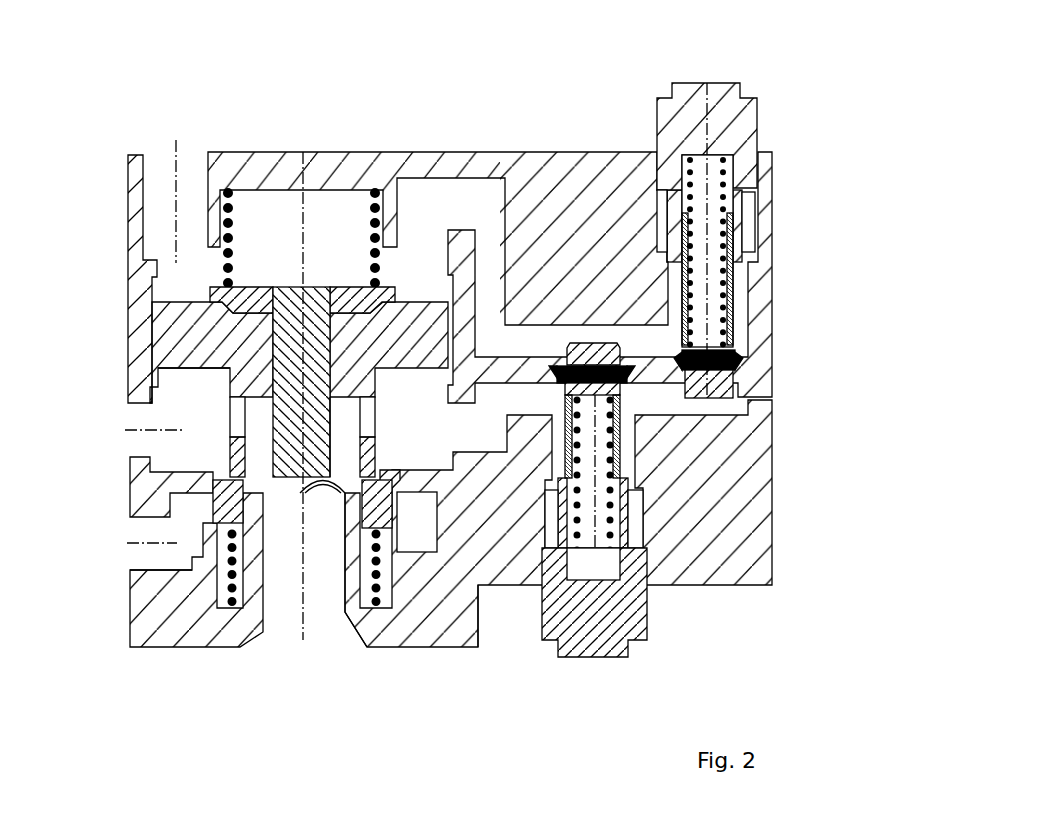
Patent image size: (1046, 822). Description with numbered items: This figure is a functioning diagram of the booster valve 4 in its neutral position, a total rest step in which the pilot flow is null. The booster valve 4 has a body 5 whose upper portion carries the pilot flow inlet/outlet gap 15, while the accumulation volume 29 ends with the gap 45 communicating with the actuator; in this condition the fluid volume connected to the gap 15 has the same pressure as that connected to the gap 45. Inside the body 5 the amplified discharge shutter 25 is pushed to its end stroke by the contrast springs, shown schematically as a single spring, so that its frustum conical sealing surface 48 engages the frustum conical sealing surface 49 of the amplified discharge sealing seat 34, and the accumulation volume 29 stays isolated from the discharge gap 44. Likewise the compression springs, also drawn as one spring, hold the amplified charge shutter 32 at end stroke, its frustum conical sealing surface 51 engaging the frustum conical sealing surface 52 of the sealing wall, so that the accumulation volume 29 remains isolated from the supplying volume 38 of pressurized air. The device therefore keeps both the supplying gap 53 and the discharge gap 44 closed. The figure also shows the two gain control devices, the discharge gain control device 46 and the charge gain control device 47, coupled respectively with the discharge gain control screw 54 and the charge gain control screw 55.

The booster valve 4 is at (466, 102).
The body 5 is at (500, 152).
The pilot flow inlet/outlet gap 15 is at (190, 157).
The amplified discharge shutter 25 is at (283, 415).
The accumulation volume 29 is at (195, 415).
The amplified charge shutter 32 is at (378, 512).
The amplified discharge sealing seat 34 is at (358, 582).
The supplying volume 38 is at (195, 518).
The discharge gap 44 is at (300, 627).
The inlet/outlet gap communicating with the actuator 45 is at (138, 415).
The discharge gain control device 46 is at (722, 277).
The charge gain control device 47 is at (600, 536).
The frustum conical sealing surface of the amplified discharge shutter 48 is at (358, 480).
The frustum conical sealing surface of the amplified discharge sealing seat 49 is at (340, 470).
The frustum conical sealing surface of the amplified charge shutter 51 is at (355, 480).
The frustum conical sealing surface of the sealing wall 52 is at (398, 482).
The supplying gap 53 is at (137, 557).
The discharge gain control screw 54 is at (710, 122).
The charge gain control screw 55 is at (605, 626).